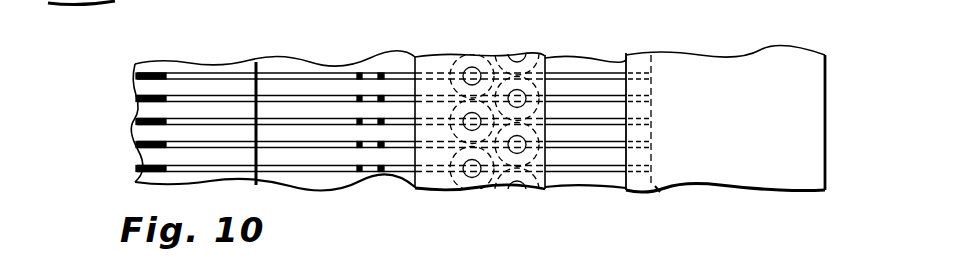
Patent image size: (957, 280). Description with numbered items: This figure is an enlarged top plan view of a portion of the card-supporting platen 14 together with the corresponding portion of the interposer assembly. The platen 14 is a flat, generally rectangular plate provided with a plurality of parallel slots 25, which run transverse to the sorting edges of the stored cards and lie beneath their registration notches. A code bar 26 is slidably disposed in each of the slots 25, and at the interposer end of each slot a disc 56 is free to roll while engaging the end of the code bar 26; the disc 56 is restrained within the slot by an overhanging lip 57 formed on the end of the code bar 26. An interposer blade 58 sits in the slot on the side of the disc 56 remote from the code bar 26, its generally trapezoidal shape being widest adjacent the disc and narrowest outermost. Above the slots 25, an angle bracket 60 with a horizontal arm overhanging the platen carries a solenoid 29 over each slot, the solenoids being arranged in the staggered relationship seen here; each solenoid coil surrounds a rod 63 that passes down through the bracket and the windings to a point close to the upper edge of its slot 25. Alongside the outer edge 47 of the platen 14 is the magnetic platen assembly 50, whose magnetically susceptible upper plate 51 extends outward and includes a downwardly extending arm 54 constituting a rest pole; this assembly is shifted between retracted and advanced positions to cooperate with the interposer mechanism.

The platen 14 is at (148, 107).
The slots 25 is at (142, 141).
The code bar 26 is at (225, 77).
The solenoid 29 is at (494, 121).
The outer edge of the platen 47 is at (659, 196).
The magnetic platen assembly 50 is at (729, 62).
The upper plate 51 is at (751, 116).
The downwardly extending arm 54 is at (630, 89).
The disc 56 is at (373, 76).
The overhanging lip 57 is at (354, 76).
The interposer blade 58 is at (569, 74).
The angle bracket 60 is at (438, 60).
The rod 63 is at (474, 172).